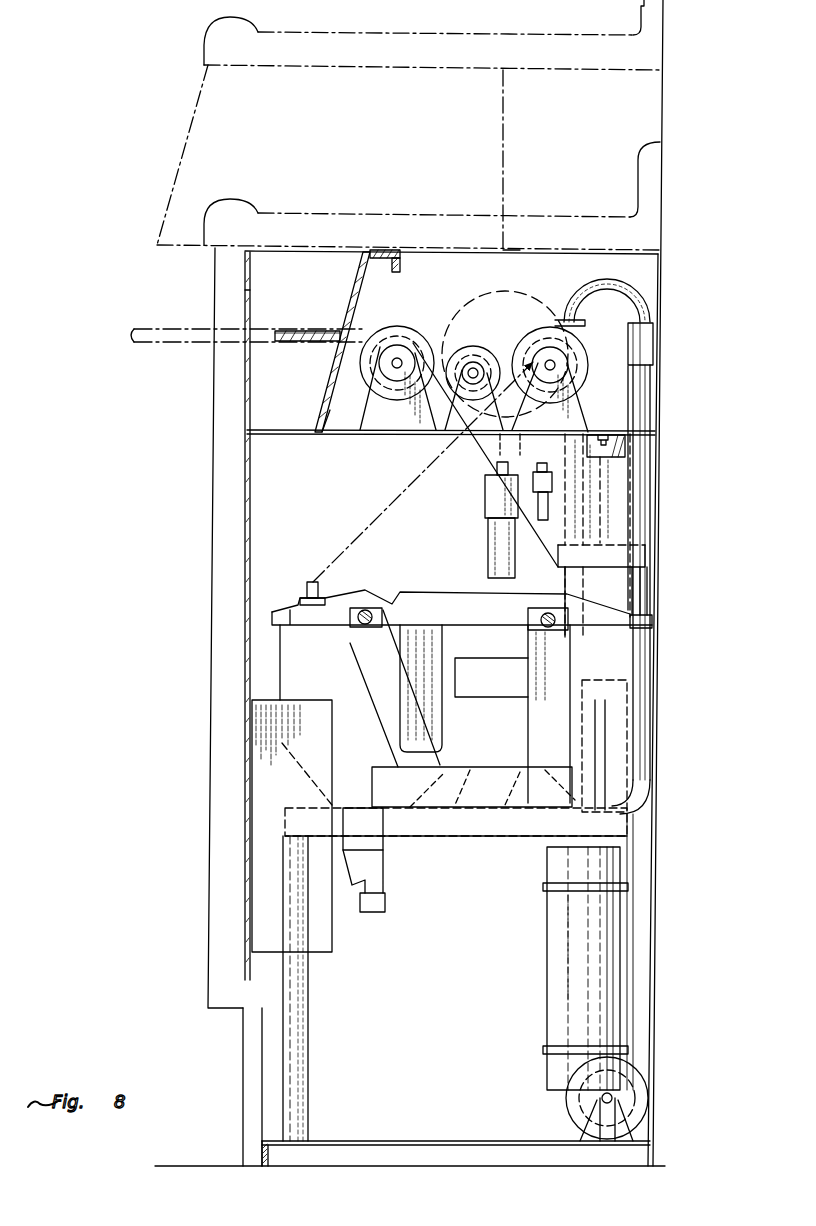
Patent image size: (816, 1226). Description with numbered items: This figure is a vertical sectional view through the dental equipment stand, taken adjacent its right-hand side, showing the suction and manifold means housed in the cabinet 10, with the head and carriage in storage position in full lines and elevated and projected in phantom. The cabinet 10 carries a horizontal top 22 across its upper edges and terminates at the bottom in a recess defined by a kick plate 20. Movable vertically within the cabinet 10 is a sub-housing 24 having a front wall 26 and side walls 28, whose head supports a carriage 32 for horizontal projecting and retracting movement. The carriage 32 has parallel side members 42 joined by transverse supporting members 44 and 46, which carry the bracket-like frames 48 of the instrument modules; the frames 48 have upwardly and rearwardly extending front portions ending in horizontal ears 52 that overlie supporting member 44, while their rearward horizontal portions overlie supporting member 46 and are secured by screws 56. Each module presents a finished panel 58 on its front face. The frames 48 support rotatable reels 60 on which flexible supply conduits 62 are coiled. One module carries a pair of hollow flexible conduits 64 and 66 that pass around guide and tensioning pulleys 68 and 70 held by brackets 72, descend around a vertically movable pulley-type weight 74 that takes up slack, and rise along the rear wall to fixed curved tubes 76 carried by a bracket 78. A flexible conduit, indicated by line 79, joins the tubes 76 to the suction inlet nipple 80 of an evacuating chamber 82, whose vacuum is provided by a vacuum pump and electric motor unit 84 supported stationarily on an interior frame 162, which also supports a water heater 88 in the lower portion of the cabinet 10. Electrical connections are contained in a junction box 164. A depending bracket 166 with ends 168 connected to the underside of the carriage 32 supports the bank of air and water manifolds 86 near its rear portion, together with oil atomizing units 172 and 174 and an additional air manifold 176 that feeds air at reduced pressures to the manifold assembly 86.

The cabinet 10 is at (663, 801).
The kick plate 20 is at (248, 1126).
The top 22 is at (410, 33).
The sub-housing 24 is at (246, 474).
The front wall 26 is at (246, 550).
The side walls 28 is at (268, 298).
The carriage 32 is at (192, 136).
The side members 42 is at (522, 262).
The transverse supporting member 44 is at (420, 262).
The transverse supporting member 46 is at (627, 450).
The bracket-like frames 48 is at (362, 320).
The ears 52 is at (392, 250).
The screws 56 is at (610, 440).
The finished panel 58 is at (333, 383).
The rotatable reels 60 is at (540, 290).
The flexible supply conduits 62 is at (178, 346).
The hollow flexible conduit 64 is at (300, 335).
The hollow flexible conduit 66 is at (493, 638).
The guide and tensioning pulley 68 is at (425, 340).
The guide and tensioning pulley 70 is at (480, 346).
The brackets 72 is at (572, 428).
The pulley-type weight 74 is at (568, 1112).
The curved tubes 76 is at (632, 300).
The bracket 78 is at (637, 353).
The conduit line 79 is at (371, 533).
The suction inlet nipple 80 is at (322, 590).
The evacuating chamber 82 is at (300, 645).
The vacuum pump and electric motor unit 84 is at (641, 731).
The air and water manifolds 86 is at (656, 521).
The water heater 88 is at (610, 1020).
The interior frame 162 is at (515, 833).
The junction box 164 is at (265, 790).
The depending bracket 166 is at (611, 568).
The ends 168 is at (510, 442).
The oil atomizing unit 172 is at (491, 505).
The oil atomizing unit 174 is at (543, 520).
The additional air manifold 176 is at (590, 543).